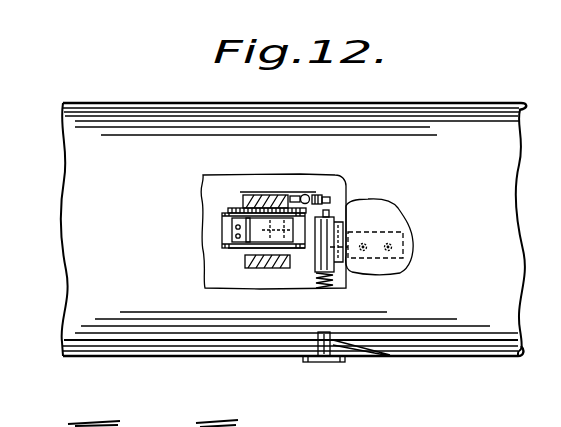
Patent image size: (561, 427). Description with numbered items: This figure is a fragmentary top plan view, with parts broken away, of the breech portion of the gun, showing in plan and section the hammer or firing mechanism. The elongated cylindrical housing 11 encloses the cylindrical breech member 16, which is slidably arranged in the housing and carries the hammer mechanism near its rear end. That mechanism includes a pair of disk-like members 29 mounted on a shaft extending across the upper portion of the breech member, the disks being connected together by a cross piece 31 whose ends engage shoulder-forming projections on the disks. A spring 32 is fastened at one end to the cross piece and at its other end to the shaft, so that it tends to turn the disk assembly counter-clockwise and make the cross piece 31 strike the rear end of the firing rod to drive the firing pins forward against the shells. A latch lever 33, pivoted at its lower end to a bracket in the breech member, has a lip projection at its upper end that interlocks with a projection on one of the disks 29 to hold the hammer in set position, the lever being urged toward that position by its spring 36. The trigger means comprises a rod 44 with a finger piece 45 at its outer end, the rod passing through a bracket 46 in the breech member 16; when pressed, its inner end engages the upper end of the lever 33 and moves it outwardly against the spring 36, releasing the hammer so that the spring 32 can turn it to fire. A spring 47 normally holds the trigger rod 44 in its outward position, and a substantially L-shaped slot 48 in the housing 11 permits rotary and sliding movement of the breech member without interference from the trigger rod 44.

The housing 11 is at (452, 124).
The breech member 16 is at (413, 243).
The disk-like members 29 is at (228, 253).
The cross piece 31 is at (228, 237).
The spring 32 is at (330, 214).
The latch lever 33 is at (308, 196).
The spring 36 is at (288, 194).
The rod 44 is at (344, 217).
The finger piece 45 is at (340, 364).
The bracket 46 is at (362, 246).
The spring 47 is at (348, 287).
The slot 48 is at (380, 347).